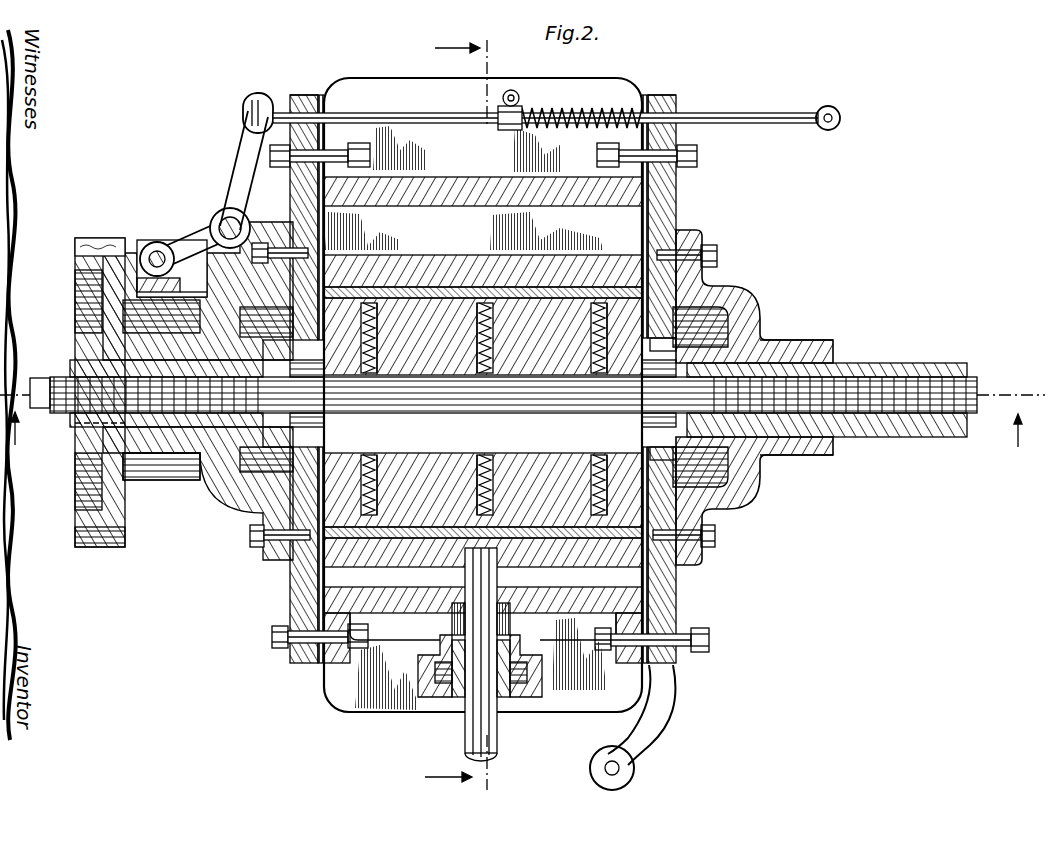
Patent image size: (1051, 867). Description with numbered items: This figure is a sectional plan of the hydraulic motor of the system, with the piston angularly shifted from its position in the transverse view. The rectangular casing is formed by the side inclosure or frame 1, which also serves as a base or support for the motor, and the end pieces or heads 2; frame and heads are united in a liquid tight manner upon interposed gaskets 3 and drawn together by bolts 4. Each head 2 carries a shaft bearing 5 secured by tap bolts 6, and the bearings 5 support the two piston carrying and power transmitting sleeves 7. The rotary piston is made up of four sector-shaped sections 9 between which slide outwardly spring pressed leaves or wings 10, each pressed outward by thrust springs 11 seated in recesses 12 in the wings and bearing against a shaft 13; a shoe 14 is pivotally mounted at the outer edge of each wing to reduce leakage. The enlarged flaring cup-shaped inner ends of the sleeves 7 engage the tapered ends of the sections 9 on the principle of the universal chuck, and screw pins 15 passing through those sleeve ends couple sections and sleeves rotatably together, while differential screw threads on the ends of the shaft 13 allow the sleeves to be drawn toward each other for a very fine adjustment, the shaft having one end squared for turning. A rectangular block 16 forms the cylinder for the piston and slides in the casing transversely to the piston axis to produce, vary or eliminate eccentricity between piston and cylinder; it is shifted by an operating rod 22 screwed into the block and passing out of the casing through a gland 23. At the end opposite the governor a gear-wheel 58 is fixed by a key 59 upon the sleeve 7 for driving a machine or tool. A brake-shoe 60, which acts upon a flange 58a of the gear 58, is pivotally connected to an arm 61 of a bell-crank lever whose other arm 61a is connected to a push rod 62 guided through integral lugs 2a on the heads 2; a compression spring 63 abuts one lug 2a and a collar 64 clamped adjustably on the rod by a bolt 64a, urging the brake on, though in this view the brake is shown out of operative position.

The side inclosure or frame 1 is at (483, 180).
The end pieces or heads 2 is at (293, 202).
The integral lugs 2a is at (313, 97).
The gaskets 3 is at (518, 415).
The bolts 4 is at (288, 158).
The shaft bearing 5 is at (224, 500).
The tap bolts 6 is at (262, 242).
The piston carrying and power transmitting sleeves 7 is at (72, 362).
The sector-shaped sections 9 is at (483, 404).
The leaves or wings 10 is at (680, 295).
The thrust springs 11 is at (625, 335).
The recesses 12 is at (607, 325).
The shaft 13 is at (53, 376).
The shoe 14 is at (645, 300).
The screw pins 15 is at (693, 343).
The rectangular block 16 is at (687, 238).
The operating rod 22 is at (464, 731).
The gland 23 is at (542, 682).
The gear-wheel 58 is at (104, 238).
The flange 58a is at (147, 472).
The key 59 is at (88, 425).
The brake-shoe 60 is at (174, 268).
The arm 61 is at (200, 238).
The arm 61a is at (238, 168).
The push rod 62 is at (428, 109).
The compression spring 63 is at (607, 107).
The collar 64 is at (524, 104).
The bolt 64a is at (514, 90).